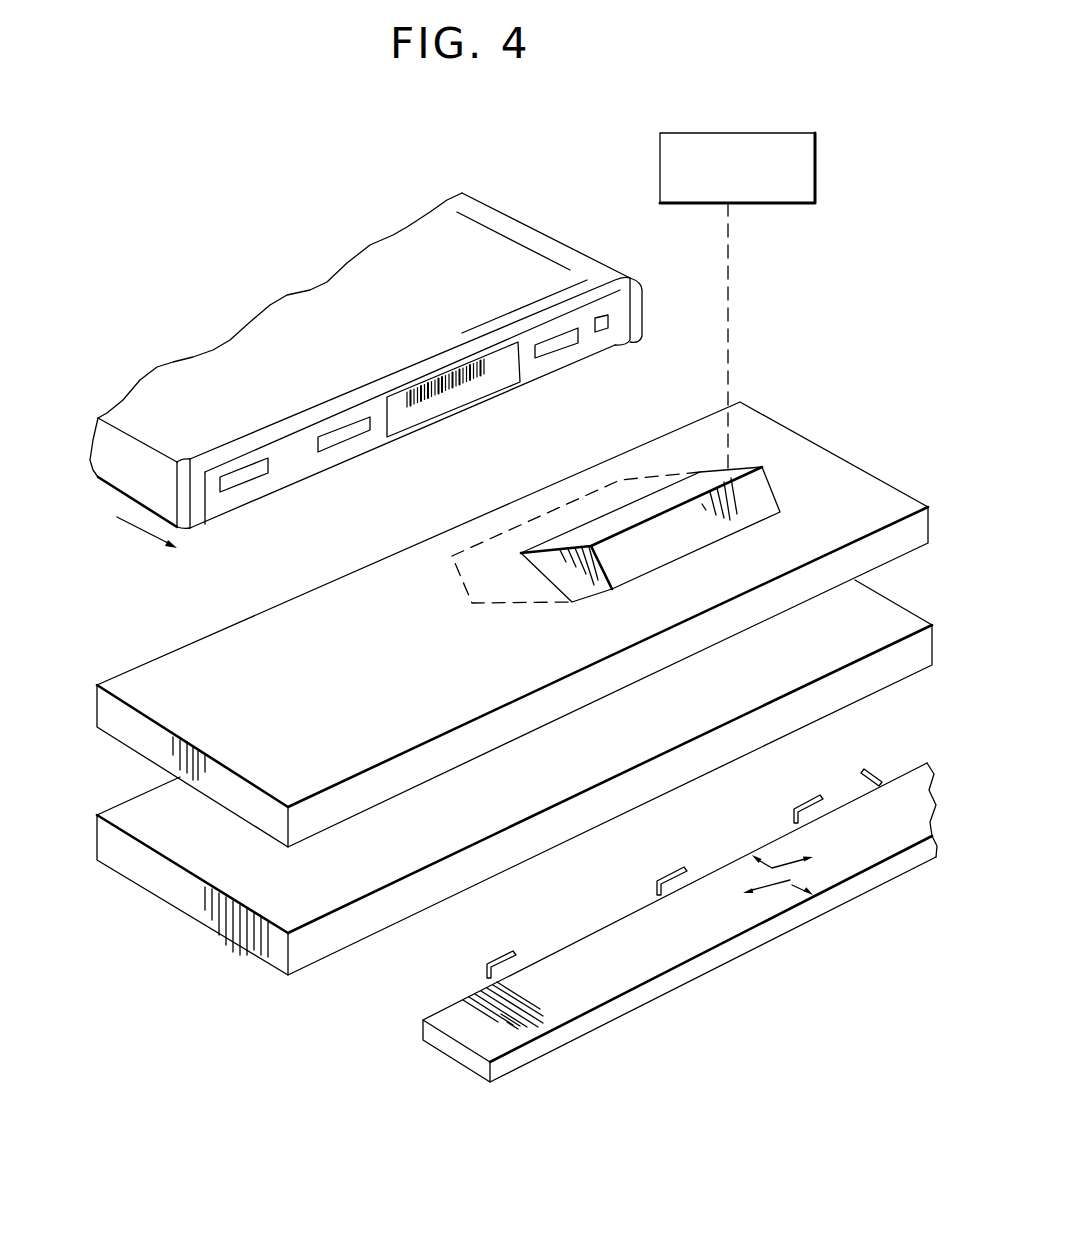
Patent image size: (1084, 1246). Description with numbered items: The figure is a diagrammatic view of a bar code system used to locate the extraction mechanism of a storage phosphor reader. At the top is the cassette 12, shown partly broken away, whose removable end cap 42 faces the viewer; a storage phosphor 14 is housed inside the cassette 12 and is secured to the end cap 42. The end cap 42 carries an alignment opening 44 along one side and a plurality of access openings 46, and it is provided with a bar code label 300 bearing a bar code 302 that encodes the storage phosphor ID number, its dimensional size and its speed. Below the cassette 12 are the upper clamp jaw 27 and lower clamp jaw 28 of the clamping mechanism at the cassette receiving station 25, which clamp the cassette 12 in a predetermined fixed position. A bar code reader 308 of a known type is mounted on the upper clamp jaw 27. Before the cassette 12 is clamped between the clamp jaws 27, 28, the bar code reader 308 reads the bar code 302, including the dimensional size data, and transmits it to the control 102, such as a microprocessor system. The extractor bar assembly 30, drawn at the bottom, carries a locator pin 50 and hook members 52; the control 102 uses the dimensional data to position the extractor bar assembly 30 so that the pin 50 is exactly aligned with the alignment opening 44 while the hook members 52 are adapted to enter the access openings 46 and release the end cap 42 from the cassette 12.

The cassette 12 is at (530, 228).
The storage phosphor 14 is at (565, 375).
The cassette receiving station 25 is at (171, 827).
The upper clamp jaw 27 is at (802, 467).
The lower clamp jaw 28 is at (188, 903).
The extractor bar assembly 30 is at (619, 1003).
The end cap 42 is at (616, 318).
The alignment opening 44 is at (602, 333).
The access openings 46 is at (253, 474).
The locator pin 50 is at (865, 770).
The hook members 52 is at (517, 945).
The control 102 is at (717, 140).
The bar code label 300 is at (400, 393).
The bar code 302 is at (443, 370).
The bar code reader 308 is at (620, 572).